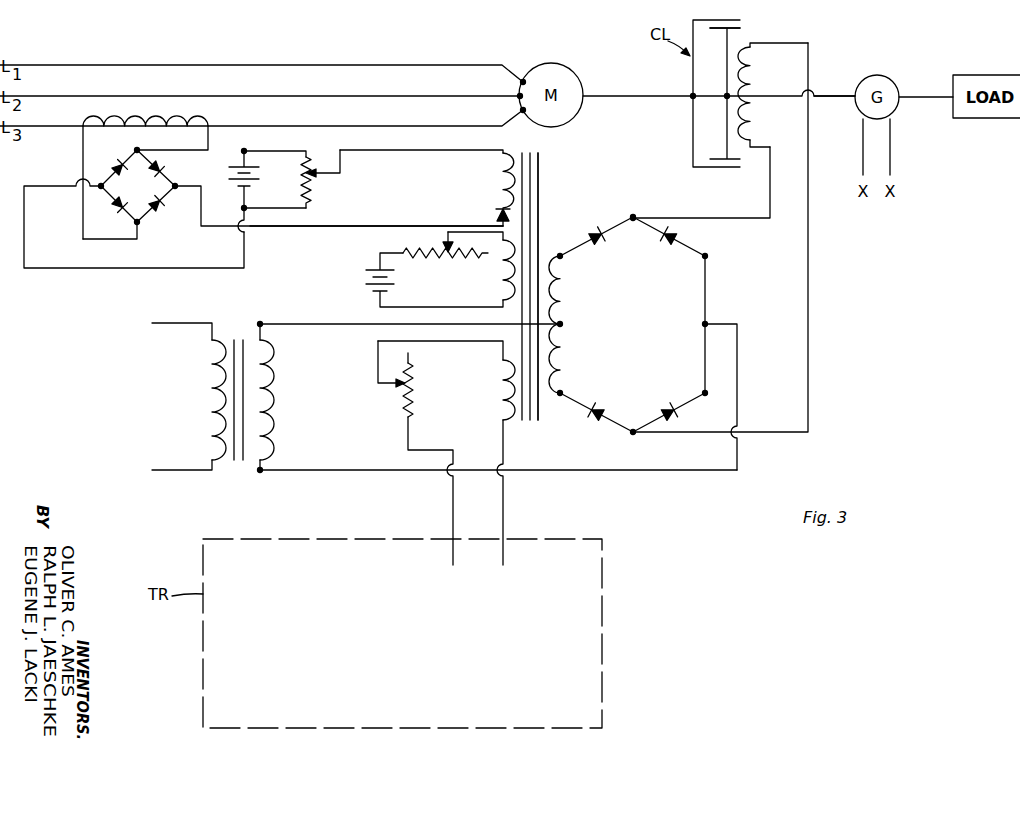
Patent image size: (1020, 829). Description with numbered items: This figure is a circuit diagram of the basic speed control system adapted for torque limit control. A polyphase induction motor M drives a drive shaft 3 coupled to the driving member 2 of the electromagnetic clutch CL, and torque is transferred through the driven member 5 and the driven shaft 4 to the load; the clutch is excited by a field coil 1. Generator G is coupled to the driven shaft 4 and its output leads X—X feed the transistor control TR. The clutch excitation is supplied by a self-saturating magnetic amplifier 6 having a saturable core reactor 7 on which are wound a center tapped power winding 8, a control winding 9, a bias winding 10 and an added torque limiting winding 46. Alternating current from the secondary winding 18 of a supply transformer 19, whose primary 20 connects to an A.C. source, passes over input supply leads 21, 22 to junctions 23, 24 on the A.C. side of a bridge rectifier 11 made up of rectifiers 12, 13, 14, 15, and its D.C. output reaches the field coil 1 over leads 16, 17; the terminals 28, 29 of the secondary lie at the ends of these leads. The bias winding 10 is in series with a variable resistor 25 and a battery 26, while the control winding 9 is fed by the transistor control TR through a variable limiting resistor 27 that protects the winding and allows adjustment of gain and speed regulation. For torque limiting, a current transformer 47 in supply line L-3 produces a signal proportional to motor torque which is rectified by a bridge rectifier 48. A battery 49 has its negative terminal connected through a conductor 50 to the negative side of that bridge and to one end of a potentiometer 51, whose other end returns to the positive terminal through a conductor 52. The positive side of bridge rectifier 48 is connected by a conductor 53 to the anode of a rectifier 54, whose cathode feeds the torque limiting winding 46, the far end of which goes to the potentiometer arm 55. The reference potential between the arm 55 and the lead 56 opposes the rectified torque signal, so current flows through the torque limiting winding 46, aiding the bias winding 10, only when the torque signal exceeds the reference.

The field coil 1 is at (756, 72).
The driving member 2 is at (712, 167).
The drive shaft 3 is at (634, 96).
The driven shaft 4 is at (831, 96).
The driven member 5 is at (742, 28).
The magnetic amplifier 6 is at (537, 152).
The saturable core reactor 7 is at (528, 424).
The center tapped power winding 8 is at (562, 284).
The control winding 9 is at (498, 382).
The bias winding 10 is at (501, 278).
The bridge rectifier 11 is at (633, 325).
The rectifier 12 is at (600, 247).
The rectifier 13 is at (677, 250).
The rectifier 14 is at (602, 410).
The rectifier 15 is at (663, 410).
The lead 16 is at (722, 218).
The lead 17 is at (700, 433).
The secondary winding 18 is at (275, 398).
The supply transformer 19 is at (237, 336).
The primary 20 is at (210, 398).
The input supply lead 21 is at (328, 322).
The input supply lead 22 is at (316, 472).
The junction 23 is at (562, 324).
The junction 24 is at (703, 325).
The variable resistor 25 is at (451, 244).
The battery 26 is at (391, 287).
The variable limiting resistor 27 is at (413, 380).
The secondary terminal 28 is at (263, 321).
The secondary terminal 29 is at (260, 474).
The torque limiting winding 46 is at (500, 171).
The current transformer 47 is at (124, 129).
The bridge rectifier 48 is at (149, 193).
The battery 49 is at (231, 166).
The conductor 50 is at (104, 269).
The potentiometer 51 is at (311, 194).
The conductor 52 is at (283, 151).
The conductor 53 is at (336, 228).
The rectifier 54 is at (497, 216).
The potentiometer arm 55 is at (316, 168).
The lead 56 is at (268, 207).